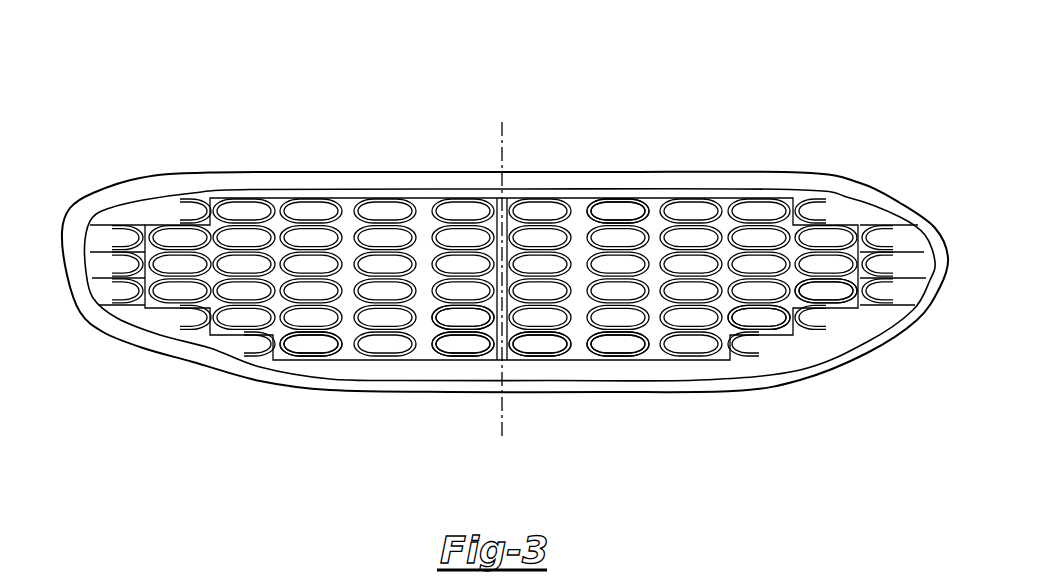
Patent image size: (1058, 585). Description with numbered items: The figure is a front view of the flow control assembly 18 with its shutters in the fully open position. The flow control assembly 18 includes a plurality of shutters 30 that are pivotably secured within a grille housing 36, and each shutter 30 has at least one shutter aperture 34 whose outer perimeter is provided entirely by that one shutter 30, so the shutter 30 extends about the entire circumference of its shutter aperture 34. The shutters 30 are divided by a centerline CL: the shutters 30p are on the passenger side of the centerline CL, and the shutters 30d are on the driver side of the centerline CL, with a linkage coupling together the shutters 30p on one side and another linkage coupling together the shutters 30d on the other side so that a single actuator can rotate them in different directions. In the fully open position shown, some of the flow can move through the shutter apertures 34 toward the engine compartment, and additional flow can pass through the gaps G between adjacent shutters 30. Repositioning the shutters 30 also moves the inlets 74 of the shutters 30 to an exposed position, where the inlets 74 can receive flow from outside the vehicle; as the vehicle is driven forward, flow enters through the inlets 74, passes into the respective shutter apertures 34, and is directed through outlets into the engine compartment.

The flow control assembly 18 is at (505, 218).
The shutters 30 is at (290, 357).
The passenger-side shutters 30p is at (176, 240).
The driver-side shutters 30d is at (538, 212).
The shutter aperture 34 is at (624, 205).
The grille housing 36 is at (935, 227).
The inlets 74 is at (767, 326).
The gaps G is at (581, 278).
The centerline CL is at (500, 438).